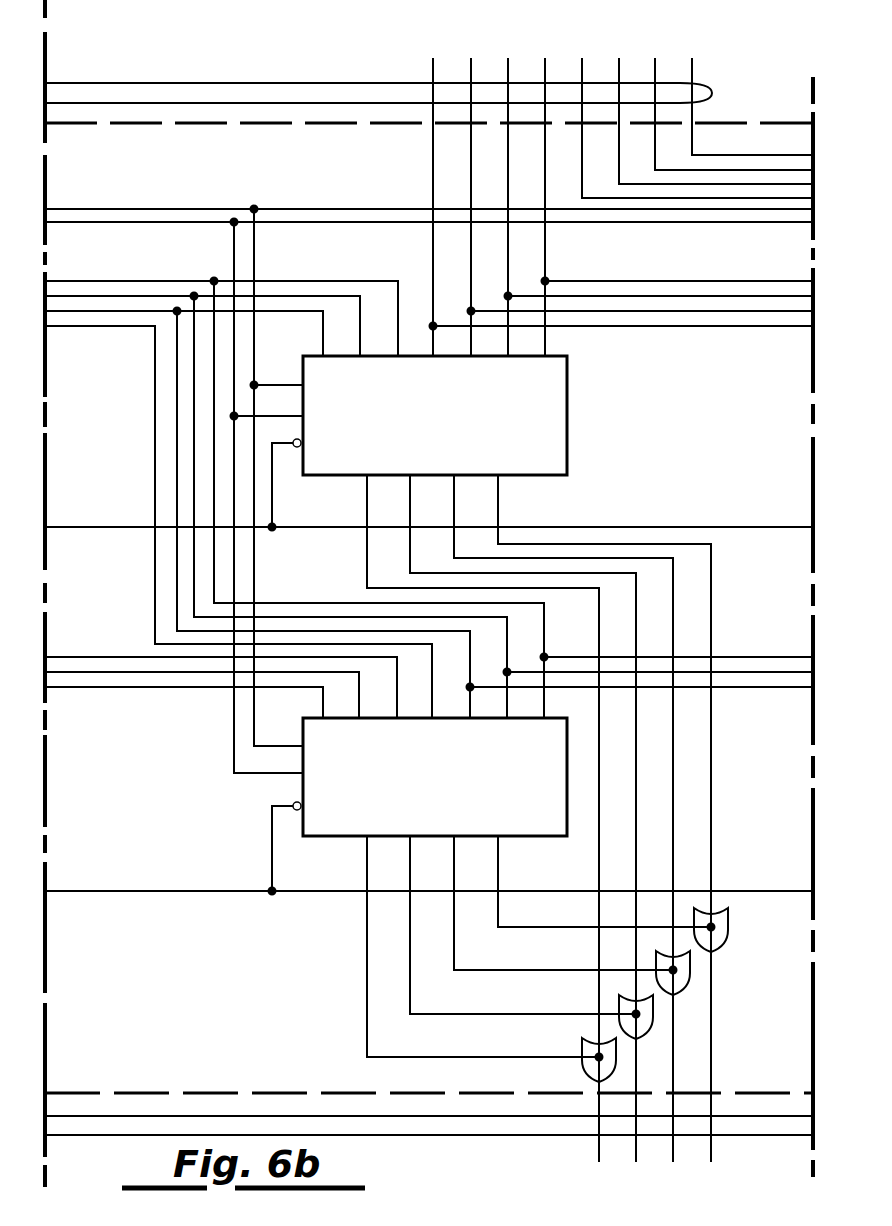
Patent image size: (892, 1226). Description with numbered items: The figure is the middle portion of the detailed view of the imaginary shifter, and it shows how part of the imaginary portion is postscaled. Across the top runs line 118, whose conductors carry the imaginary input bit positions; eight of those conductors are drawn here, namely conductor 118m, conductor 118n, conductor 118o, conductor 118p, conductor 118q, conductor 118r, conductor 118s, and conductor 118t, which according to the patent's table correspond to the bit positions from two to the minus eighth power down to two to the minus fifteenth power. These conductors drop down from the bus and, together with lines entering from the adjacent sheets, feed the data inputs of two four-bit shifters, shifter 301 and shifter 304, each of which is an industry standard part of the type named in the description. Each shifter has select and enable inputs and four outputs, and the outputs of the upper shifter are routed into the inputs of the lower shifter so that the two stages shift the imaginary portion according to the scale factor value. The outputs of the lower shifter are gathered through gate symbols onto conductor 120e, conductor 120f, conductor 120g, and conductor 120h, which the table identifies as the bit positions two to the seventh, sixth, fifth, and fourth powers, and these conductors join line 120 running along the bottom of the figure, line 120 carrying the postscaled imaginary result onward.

The line 118 is at (197, 82).
The conductor 118m is at (432, 73).
The conductor 118n is at (470, 72).
The conductor 118o is at (507, 73).
The conductor 118p is at (543, 72).
The conductor 118q is at (580, 73).
The conductor 118r is at (615, 72).
The conductor 118s is at (652, 73).
The conductor 118t is at (690, 72).
The 4-BIT SHIFTER 301 is at (568, 408).
The 4-BIT SHIFTER 304 is at (334, 838).
The conductor 120e is at (389, 1055).
The conductor 120f is at (429, 1013).
The conductor 120g is at (472, 968).
The conductor 120h is at (512, 926).
The line 120 is at (410, 1136).